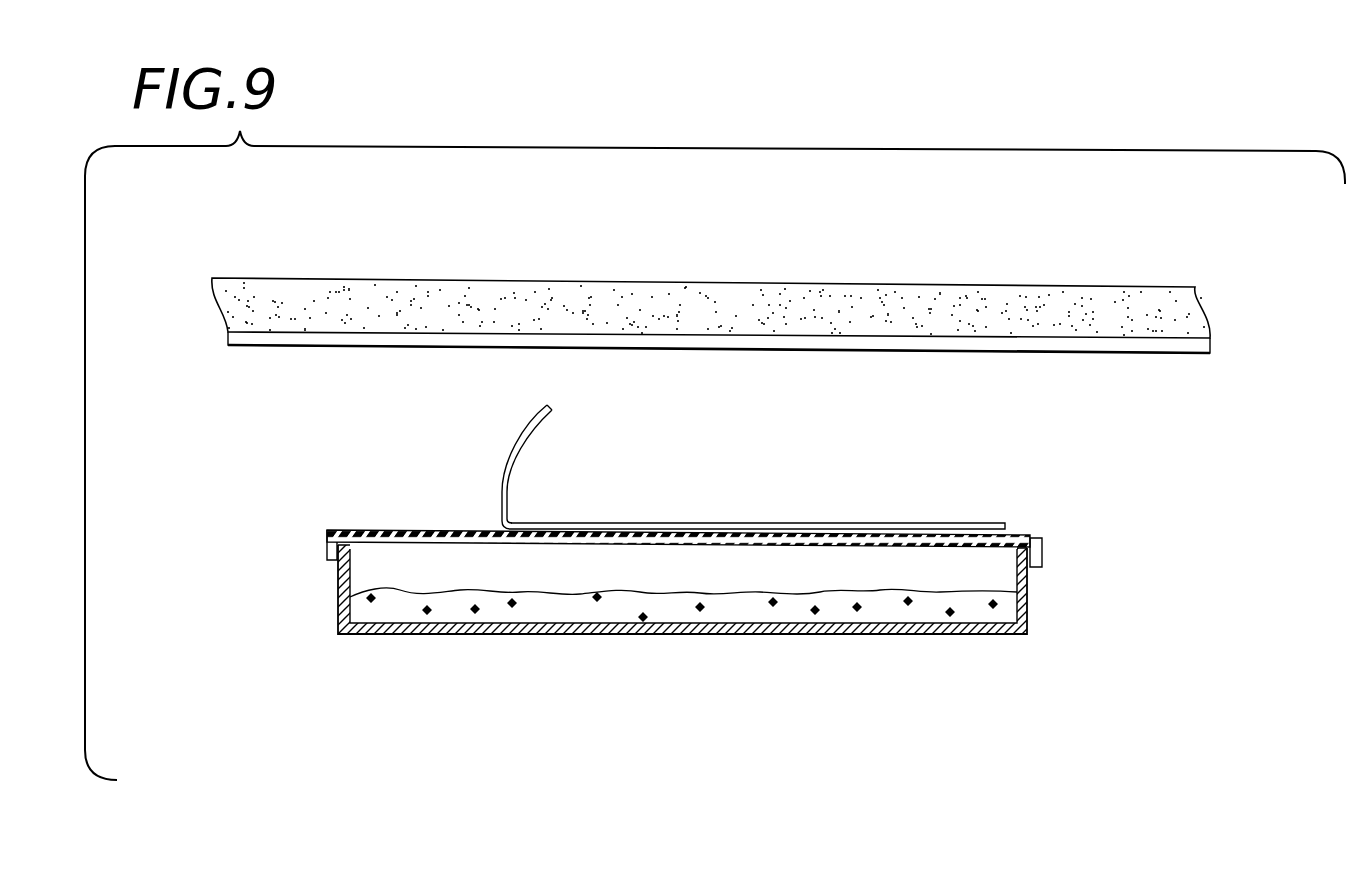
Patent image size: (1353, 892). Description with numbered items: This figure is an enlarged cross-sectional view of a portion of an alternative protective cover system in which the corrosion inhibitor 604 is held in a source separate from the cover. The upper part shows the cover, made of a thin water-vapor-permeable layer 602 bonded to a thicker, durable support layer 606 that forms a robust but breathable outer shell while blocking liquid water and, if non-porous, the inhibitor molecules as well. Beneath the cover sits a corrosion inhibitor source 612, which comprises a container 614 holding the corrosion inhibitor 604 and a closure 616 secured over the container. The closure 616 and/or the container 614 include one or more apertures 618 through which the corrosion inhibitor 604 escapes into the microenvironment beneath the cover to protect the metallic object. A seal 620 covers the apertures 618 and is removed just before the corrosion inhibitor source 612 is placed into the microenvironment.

The water-vapor-permeable layer 602 is at (1167, 350).
The corrosion inhibitor 604 is at (553, 613).
The support layer 606 is at (1074, 297).
The corrosion inhibitor source 612 is at (1078, 578).
The container 614 is at (971, 637).
The closure 616 is at (690, 532).
The apertures 618 is at (567, 537).
The seal 620 is at (526, 439).